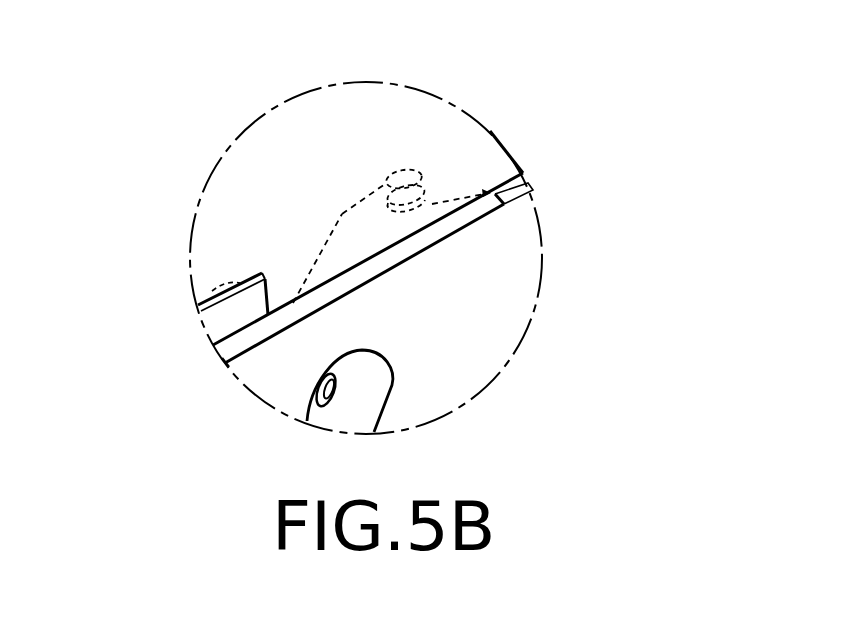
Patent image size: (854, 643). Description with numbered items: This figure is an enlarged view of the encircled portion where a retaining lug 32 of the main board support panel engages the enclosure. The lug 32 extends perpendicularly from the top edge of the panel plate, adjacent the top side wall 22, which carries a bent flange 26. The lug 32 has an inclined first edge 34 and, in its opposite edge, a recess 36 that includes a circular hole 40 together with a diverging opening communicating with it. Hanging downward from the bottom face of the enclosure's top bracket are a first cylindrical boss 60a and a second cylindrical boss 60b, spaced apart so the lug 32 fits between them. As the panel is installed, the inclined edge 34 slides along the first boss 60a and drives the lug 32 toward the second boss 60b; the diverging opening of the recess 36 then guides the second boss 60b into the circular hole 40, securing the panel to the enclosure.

The side wall 22 is at (252, 343).
The bent flange 26 is at (226, 317).
The retaining lug 32 is at (343, 212).
The inclined first edge 34 is at (323, 240).
The recess 36 is at (428, 201).
The circular hole 40 is at (402, 210).
The first cylindrical boss 60a is at (223, 287).
The second cylindrical boss 60b is at (403, 198).